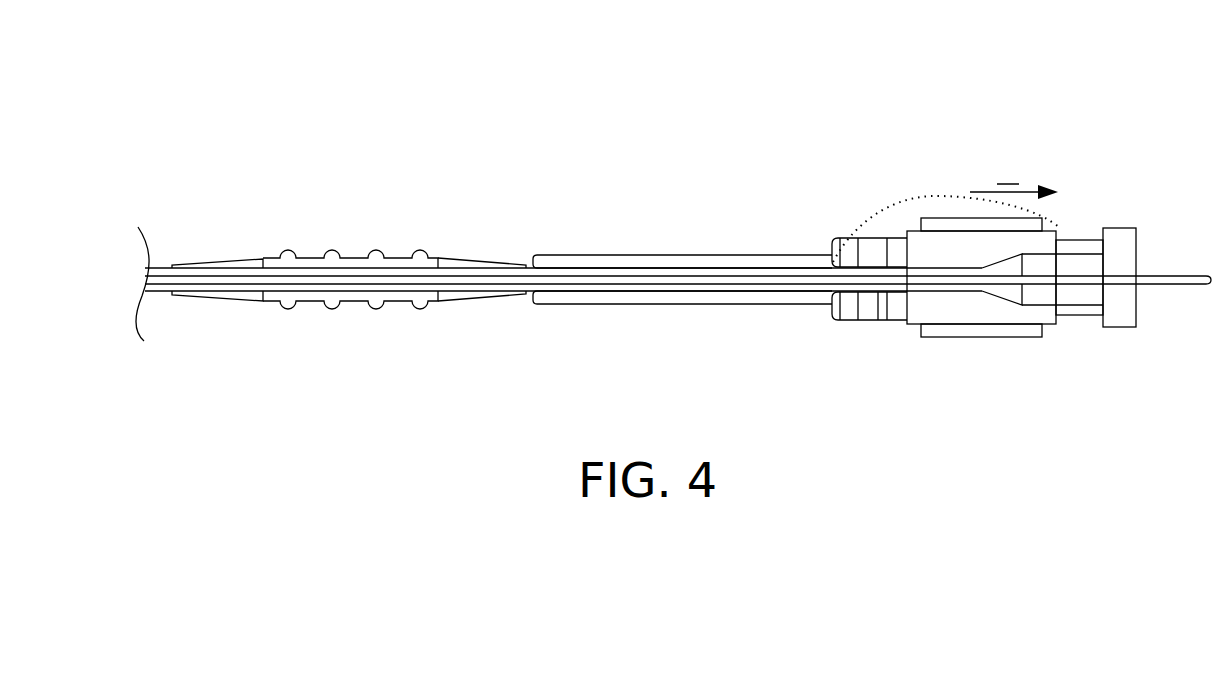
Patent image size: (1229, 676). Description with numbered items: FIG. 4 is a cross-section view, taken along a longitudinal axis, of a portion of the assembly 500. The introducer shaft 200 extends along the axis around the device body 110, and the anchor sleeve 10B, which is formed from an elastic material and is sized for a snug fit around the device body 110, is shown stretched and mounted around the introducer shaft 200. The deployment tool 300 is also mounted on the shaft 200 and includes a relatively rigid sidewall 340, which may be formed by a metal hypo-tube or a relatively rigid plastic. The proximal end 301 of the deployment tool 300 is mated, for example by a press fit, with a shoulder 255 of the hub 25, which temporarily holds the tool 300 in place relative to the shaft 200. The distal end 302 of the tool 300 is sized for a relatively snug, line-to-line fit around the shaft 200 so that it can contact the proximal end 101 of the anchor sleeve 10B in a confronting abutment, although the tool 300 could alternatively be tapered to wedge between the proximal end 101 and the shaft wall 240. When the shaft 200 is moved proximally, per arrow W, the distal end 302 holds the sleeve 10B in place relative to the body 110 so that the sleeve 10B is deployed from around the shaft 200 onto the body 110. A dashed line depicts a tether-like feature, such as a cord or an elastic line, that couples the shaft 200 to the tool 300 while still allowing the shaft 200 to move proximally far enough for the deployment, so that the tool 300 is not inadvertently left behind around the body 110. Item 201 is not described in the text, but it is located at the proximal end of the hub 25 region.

The assembly 500 is at (565, 64).
The anchor sleeve 10B is at (379, 202).
The introducer shaft 200 is at (171, 242).
The proximal end of anchor sleeve 101 is at (531, 258).
The shaft wall 240 is at (697, 257).
The sidewall of deployment tool 340 is at (659, 297).
The distal end of deployment tool 302 is at (530, 295).
The deployment tool 300 is at (785, 230).
The proximal end of deployment tool 301 is at (860, 320).
The shoulder of hub 255 is at (883, 314).
The hub 25 is at (1017, 316).
The end cap 201 is at (1125, 262).
The device body 110 is at (1148, 285).